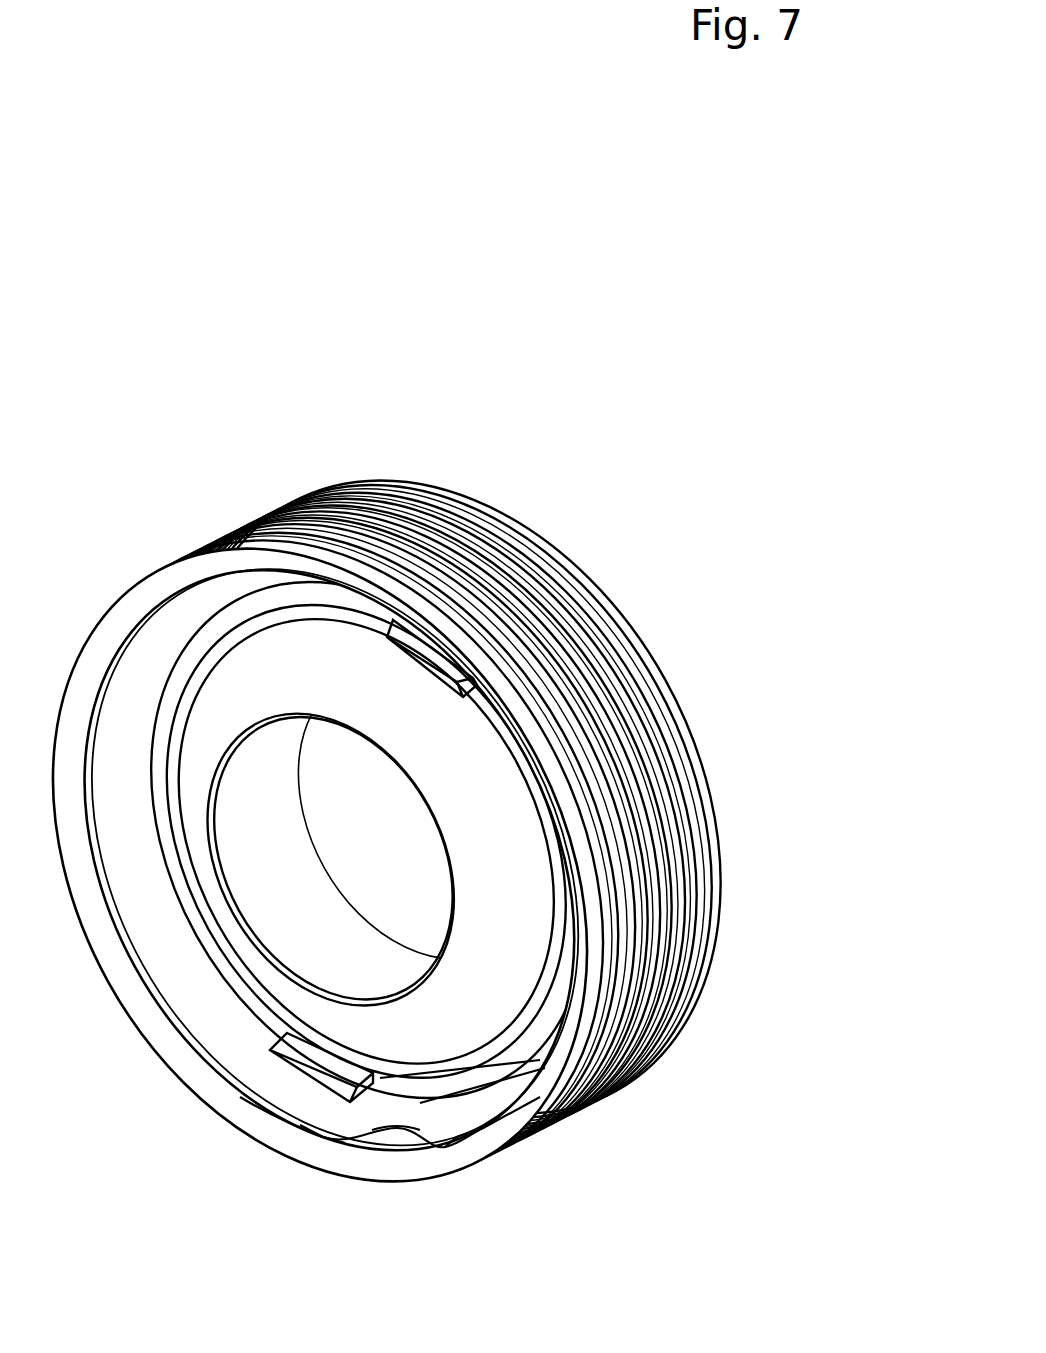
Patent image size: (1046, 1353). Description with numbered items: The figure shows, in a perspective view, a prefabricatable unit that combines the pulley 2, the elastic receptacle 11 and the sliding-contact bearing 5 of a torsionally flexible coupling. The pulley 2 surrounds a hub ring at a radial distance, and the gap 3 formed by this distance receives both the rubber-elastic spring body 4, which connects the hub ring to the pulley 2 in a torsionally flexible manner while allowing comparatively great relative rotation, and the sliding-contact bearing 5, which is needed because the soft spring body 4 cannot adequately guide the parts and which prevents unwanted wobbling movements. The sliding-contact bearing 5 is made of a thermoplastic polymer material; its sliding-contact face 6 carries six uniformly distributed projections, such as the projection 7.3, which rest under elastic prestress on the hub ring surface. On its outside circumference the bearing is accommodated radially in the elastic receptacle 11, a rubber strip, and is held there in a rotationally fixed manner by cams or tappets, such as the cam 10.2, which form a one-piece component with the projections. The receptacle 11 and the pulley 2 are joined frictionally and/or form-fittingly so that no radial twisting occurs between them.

The pulley 2 is at (467, 533).
The gap 3 is at (228, 593).
The spring body 4 is at (445, 742).
The sliding-contact bearing 5 is at (322, 1137).
The sliding-contact face 6 is at (428, 1118).
The projection 7.3 is at (397, 1130).
The elastic receptacle 11 is at (456, 1137).
The cam 10.2 is at (483, 1129).